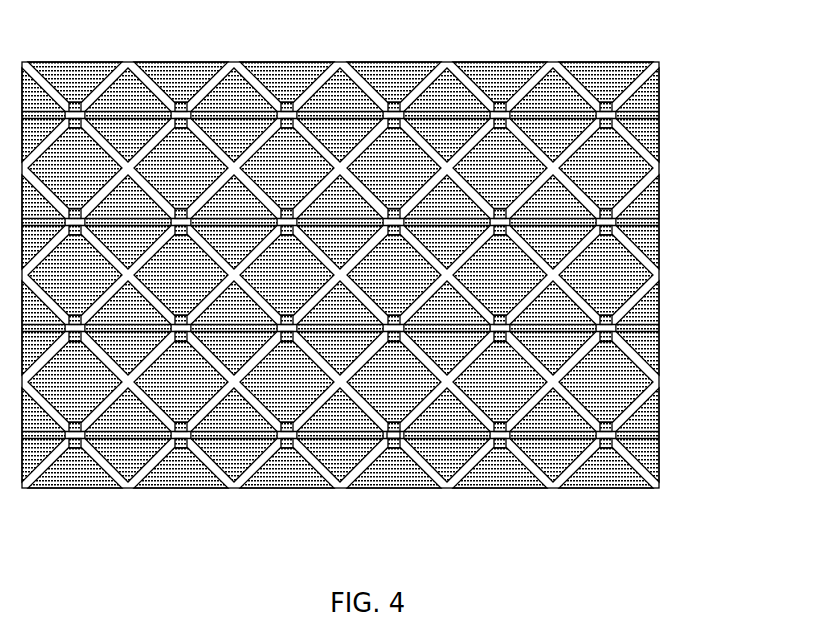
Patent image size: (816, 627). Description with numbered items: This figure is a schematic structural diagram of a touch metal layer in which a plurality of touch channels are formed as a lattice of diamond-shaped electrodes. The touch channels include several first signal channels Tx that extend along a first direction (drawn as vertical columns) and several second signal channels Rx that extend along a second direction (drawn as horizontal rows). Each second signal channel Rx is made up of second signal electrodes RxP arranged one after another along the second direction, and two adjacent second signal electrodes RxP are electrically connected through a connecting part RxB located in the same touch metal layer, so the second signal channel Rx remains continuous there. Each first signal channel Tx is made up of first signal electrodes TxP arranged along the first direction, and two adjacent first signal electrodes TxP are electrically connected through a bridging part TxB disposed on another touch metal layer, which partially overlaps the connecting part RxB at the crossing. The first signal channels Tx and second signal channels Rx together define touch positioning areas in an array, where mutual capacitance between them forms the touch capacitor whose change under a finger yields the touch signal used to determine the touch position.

The first signal channel Tx is at (81, 80).
The second signal channel Rx is at (633, 118).
The first signal electrode TxP is at (390, 388).
The second signal electrode RxP is at (330, 448).
The bridging part TxB is at (398, 445).
The connecting part RxB is at (388, 439).